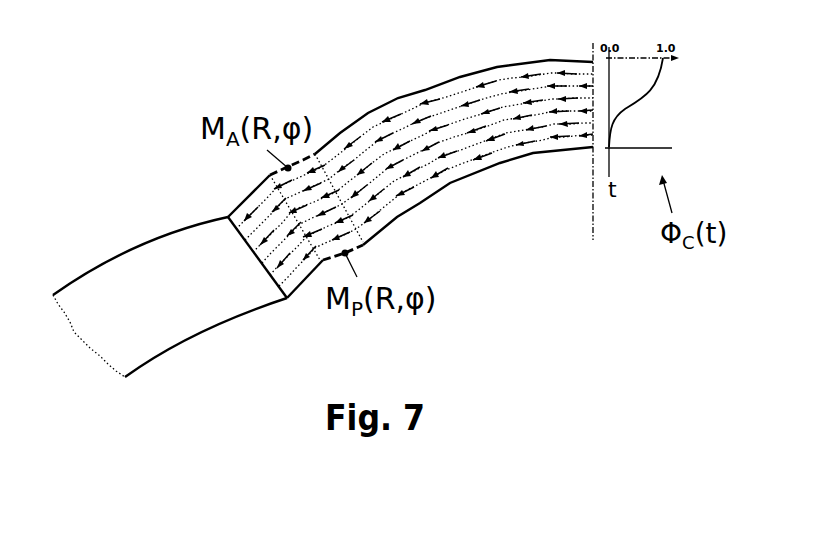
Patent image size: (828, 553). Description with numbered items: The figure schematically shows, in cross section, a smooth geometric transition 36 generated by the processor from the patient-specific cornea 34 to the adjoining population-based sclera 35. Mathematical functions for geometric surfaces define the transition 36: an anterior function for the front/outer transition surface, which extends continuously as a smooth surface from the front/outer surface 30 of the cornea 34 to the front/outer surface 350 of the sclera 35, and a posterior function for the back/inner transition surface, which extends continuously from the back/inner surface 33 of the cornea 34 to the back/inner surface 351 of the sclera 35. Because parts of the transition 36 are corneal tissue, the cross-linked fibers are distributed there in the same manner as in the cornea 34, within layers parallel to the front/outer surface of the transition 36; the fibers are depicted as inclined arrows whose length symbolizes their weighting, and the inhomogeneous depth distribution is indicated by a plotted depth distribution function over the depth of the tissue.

The front/outer surface of the cornea 30 is at (368, 113).
The back/inner surface of the cornea 33 is at (453, 182).
The patient-specific cornea 34 is at (440, 92).
The population-based sclera 35 is at (200, 245).
The transition 36 is at (365, 252).
The front/outer surface of the sclera 350 is at (97, 272).
The back/inner surface of the sclera 351 is at (183, 340).